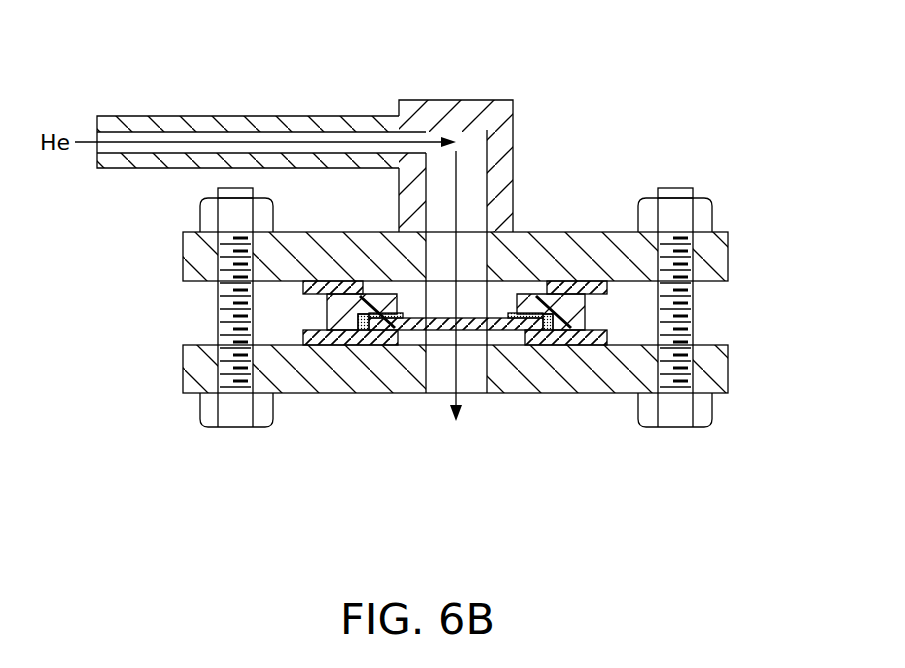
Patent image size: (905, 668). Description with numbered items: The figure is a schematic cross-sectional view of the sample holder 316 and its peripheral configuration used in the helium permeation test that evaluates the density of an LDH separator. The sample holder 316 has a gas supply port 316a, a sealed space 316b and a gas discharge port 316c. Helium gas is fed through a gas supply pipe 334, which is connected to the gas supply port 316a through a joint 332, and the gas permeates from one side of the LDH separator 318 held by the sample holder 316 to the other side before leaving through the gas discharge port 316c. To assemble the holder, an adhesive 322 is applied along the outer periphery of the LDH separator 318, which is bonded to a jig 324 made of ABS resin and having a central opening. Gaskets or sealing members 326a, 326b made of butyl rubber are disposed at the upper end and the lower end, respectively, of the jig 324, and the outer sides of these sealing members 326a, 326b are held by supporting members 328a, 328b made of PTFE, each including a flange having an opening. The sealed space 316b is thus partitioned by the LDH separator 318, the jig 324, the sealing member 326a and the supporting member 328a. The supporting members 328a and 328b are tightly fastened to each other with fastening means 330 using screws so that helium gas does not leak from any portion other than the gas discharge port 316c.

The sample holder 316 is at (652, 100).
The gas supply port 316a is at (487, 265).
The sealed space 316b is at (397, 383).
The gas discharge port 316c is at (410, 385).
The LDH separator 318 is at (572, 308).
The adhesive 322 is at (548, 345).
The jig 324 is at (602, 293).
The sealing member 326a is at (613, 287).
The sealing member 326b is at (610, 333).
The supporting member 328a is at (715, 250).
The supporting member 328b is at (715, 368).
The fastening means 330 is at (676, 427).
The joint 332 is at (443, 110).
The gas supply pipe 334 is at (272, 122).